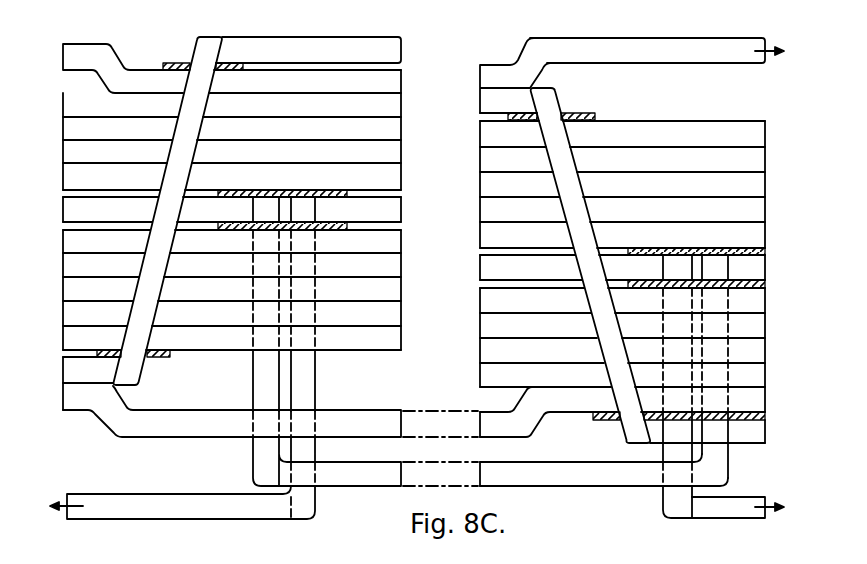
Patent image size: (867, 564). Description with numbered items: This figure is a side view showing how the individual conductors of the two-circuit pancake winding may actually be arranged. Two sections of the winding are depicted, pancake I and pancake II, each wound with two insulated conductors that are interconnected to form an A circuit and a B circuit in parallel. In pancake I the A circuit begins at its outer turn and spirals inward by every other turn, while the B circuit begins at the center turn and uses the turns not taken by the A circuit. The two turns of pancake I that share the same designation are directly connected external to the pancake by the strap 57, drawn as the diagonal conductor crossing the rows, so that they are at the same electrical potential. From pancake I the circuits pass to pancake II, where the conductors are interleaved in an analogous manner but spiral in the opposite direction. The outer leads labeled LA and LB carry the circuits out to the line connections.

The strap 57 is at (556, 102).
The output line A LA is at (664, 38).
The output line B LB is at (724, 520).
The pancake I is at (643, 548).
The pancake II is at (250, 550).